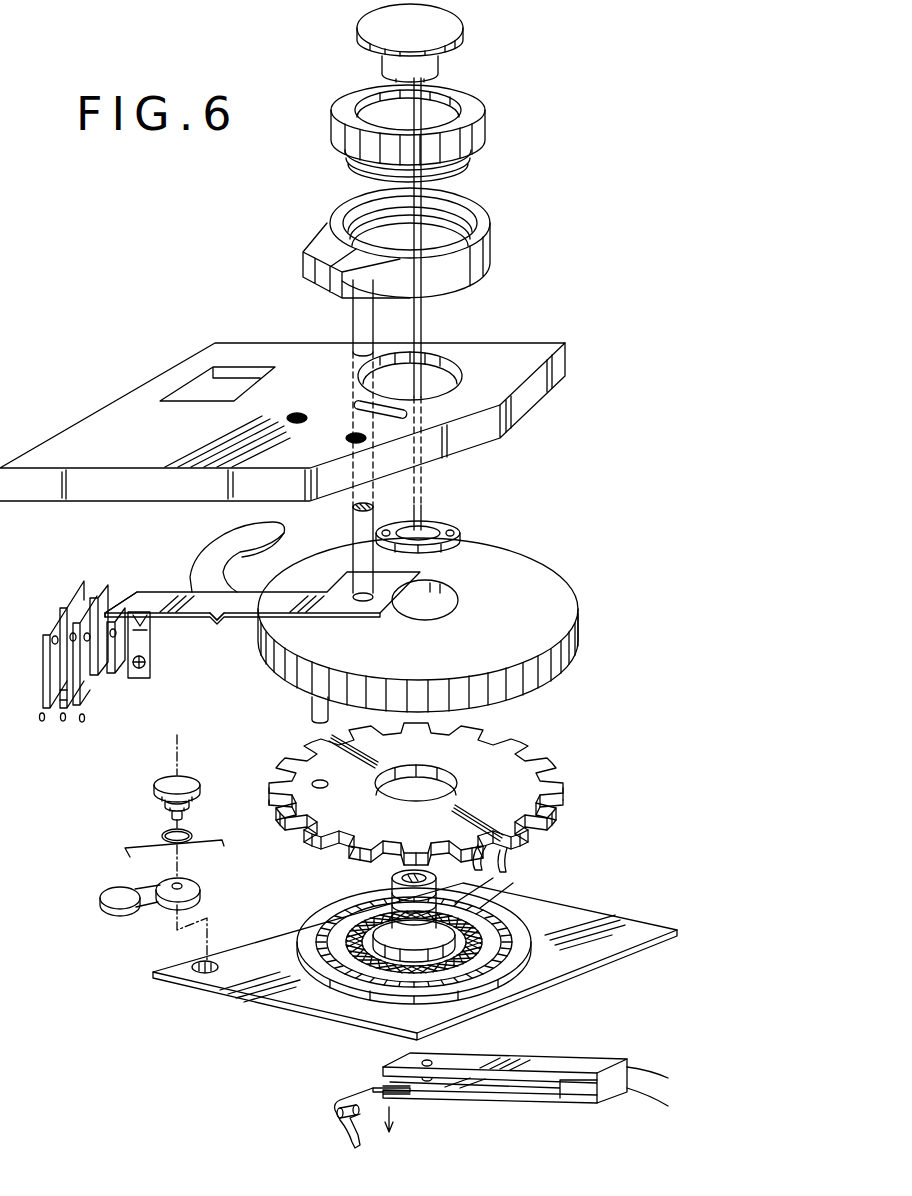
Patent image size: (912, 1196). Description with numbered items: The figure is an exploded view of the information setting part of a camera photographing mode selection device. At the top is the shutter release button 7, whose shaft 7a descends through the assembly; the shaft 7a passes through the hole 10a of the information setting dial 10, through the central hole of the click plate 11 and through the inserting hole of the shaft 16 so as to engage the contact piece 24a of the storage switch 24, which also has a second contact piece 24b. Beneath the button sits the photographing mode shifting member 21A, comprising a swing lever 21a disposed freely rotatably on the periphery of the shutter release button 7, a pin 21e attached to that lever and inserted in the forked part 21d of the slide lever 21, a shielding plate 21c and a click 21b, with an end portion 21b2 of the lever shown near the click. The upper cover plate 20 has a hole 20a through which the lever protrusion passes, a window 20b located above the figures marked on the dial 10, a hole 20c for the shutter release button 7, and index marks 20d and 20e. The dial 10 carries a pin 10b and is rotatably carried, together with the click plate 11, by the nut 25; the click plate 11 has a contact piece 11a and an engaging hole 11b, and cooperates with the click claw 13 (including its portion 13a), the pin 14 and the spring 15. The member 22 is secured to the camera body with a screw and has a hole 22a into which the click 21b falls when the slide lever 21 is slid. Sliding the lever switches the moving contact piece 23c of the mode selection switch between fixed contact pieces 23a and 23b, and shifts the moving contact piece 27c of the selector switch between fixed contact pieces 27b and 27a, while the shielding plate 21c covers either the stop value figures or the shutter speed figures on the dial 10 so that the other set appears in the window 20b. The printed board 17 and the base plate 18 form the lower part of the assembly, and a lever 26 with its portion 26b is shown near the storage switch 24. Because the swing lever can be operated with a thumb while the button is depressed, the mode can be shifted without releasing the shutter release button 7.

The shutter release button 7 is at (440, 24).
The shaft 7a is at (423, 183).
The information setting dial 10 is at (576, 586).
The hole 10a is at (437, 606).
The pin 10b is at (320, 707).
The click plate 11 is at (507, 742).
The contact piece 11a is at (506, 858).
The engaging hole 11b is at (320, 789).
The click claw 13 is at (197, 893).
The lever lobe 13a is at (128, 912).
The pin 14 is at (187, 792).
The spring 15 is at (224, 847).
The shaft 16 is at (384, 922).
The printed board 17 is at (346, 988).
The base plate 18 is at (280, 993).
The upper cover plate 20 is at (560, 372).
The hole 20a is at (360, 402).
The window 20b is at (207, 390).
The hole 20c is at (440, 378).
The index mark 20d is at (346, 441).
The index mark 20e is at (286, 418).
The slide lever 21 is at (168, 604).
The photographing mode shifting member 21A is at (306, 623).
The swing lever 21a is at (315, 287).
The click 21b is at (218, 622).
The arm end tab 21b2 is at (139, 620).
The shielding plate 21c is at (268, 525).
The forked part 21d is at (365, 603).
The pin 21e is at (353, 324).
The member 22 is at (146, 679).
The hole 22a is at (148, 628).
The fixed contact piece 23a is at (85, 690).
The fixed contact piece 23b is at (43, 680).
The moving contact piece 23c is at (66, 610).
The storage switch 24 is at (594, 1067).
The contact piece 24a is at (432, 1062).
The contact piece 24b is at (445, 1090).
The nut 25 is at (443, 527).
The lever 26 is at (333, 1117).
The pin 26b is at (385, 1087).
The fixed contact piece 27a is at (78, 625).
The fixed contact piece 27b is at (117, 674).
The moving contact piece 27c is at (98, 600).